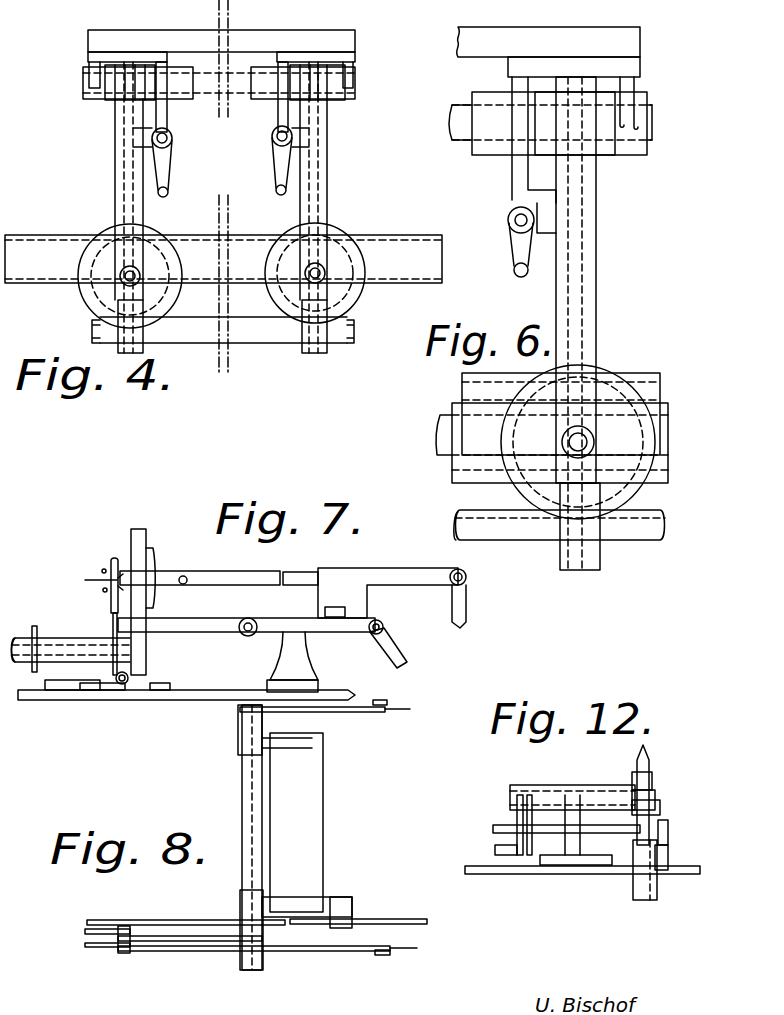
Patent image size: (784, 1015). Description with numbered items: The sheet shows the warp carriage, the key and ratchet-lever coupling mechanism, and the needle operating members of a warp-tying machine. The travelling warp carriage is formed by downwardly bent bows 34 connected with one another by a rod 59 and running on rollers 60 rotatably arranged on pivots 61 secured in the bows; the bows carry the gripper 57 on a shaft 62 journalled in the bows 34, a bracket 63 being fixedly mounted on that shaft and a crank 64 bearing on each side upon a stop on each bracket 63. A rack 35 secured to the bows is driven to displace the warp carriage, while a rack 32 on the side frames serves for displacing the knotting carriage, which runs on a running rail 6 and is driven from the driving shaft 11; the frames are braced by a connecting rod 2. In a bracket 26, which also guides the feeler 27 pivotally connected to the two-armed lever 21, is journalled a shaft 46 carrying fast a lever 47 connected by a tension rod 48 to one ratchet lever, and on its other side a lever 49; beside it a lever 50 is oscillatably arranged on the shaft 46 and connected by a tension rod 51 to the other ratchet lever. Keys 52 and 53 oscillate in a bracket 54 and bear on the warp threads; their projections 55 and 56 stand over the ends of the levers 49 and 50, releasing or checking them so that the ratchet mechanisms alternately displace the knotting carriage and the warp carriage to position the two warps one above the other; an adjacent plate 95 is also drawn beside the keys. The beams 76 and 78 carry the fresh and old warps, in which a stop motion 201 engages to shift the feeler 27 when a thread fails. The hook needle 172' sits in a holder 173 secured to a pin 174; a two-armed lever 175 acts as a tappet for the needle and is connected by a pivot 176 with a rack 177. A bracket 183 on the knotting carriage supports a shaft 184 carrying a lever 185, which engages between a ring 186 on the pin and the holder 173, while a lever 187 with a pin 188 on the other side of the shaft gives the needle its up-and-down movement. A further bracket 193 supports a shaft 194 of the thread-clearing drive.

In FIG. 6, the connecting rod 2 is at (653, 530).
In FIG. 6, the running rail 6 is at (452, 405).
In FIG. 6, the driving shaft 11 is at (443, 460).
In FIG. 7, the two-armed lever 21 is at (467, 616).
In FIG. 7, the bracket 26 is at (300, 668).
In FIG. 8, the bracket 26 is at (312, 791).
In FIG. 7, the feeler 27 is at (385, 576).
In FIG. 8, the feeler 27 is at (366, 918).
In FIG. 6, the rack 32 is at (462, 373).
In FIG. 4, the downwardly bent bows 34 is at (115, 164).
In FIG. 6, the downwardly bent bows 34 is at (597, 238).
In FIG. 4, the rack 35 is at (195, 234).
In FIG. 7, the shaft 46 is at (249, 636).
In FIG. 8, the shaft 46 is at (242, 772).
In FIG. 8, the lever 47 is at (340, 718).
In FIG. 8, the tension rod 48 is at (400, 707).
In FIG. 8, the lever 49 is at (201, 940).
In FIG. 8, the lever 50 is at (232, 951).
In FIG. 7, the tension rod 51 is at (403, 653).
In FIG. 8, the tension rod 51 is at (394, 952).
In FIG. 7, the key 52 is at (116, 570).
In FIG. 8, the key 52 is at (86, 922).
In FIG. 7, the key 53 is at (111, 602).
In FIG. 8, the key 53 is at (90, 946).
In FIG. 7, the bracket 54 is at (160, 700).
In FIG. 8, the projection 55 is at (85, 932).
In FIG. 7, the projection 56 is at (113, 620).
In FIG. 8, the projection 56 is at (119, 955).
In FIG. 4, the gripper 57 is at (266, 40).
In FIG. 6, the gripper 57 is at (482, 42).
In FIG. 4, the rod 59 is at (281, 336).
In FIG. 6, the rod 59 is at (463, 540).
In FIG. 4, the roller 60 is at (115, 247).
In FIG. 6, the roller 60 is at (602, 375).
In FIG. 4, the pivot 61 is at (128, 274).
In FIG. 6, the pivot 61 is at (585, 440).
In FIG. 4, the shaft 62 is at (240, 85).
In FIG. 6, the shaft 62 is at (465, 130).
In FIG. 4, the bracket 63 is at (95, 58).
In FIG. 6, the bracket 63 is at (638, 67).
In FIG. 4, the crank 64 is at (164, 182).
In FIG. 6, the crank 64 is at (514, 270).
In FIG. 7, the beam 76 is at (103, 590).
In FIG. 7, the beam 78 is at (102, 567).
In FIG. 7, the plate 95 is at (147, 664).
In FIG. 12, the hook needle 172' is at (615, 790).
In FIG. 12, the holder 173 is at (634, 812).
In FIG. 12, the pin 174 is at (634, 888).
In FIG. 12, the two-armed lever 175 is at (666, 866).
In FIG. 12, the pivot 176 is at (661, 819).
In FIG. 12, the rack 177 is at (495, 826).
In FIG. 12, the bracket 183 is at (565, 810).
In FIG. 12, the shaft 184 is at (510, 796).
In FIG. 12, the lever 185 is at (632, 783).
In FIG. 12, the ring 186 is at (632, 769).
In FIG. 12, the lever 187 is at (518, 824).
In FIG. 12, the pin 188 is at (495, 846).
In FIG. 7, the bracket 193 is at (46, 662).
In FIG. 7, the shaft 194 is at (12, 640).
In FIG. 7, the stop motion 201 is at (90, 578).